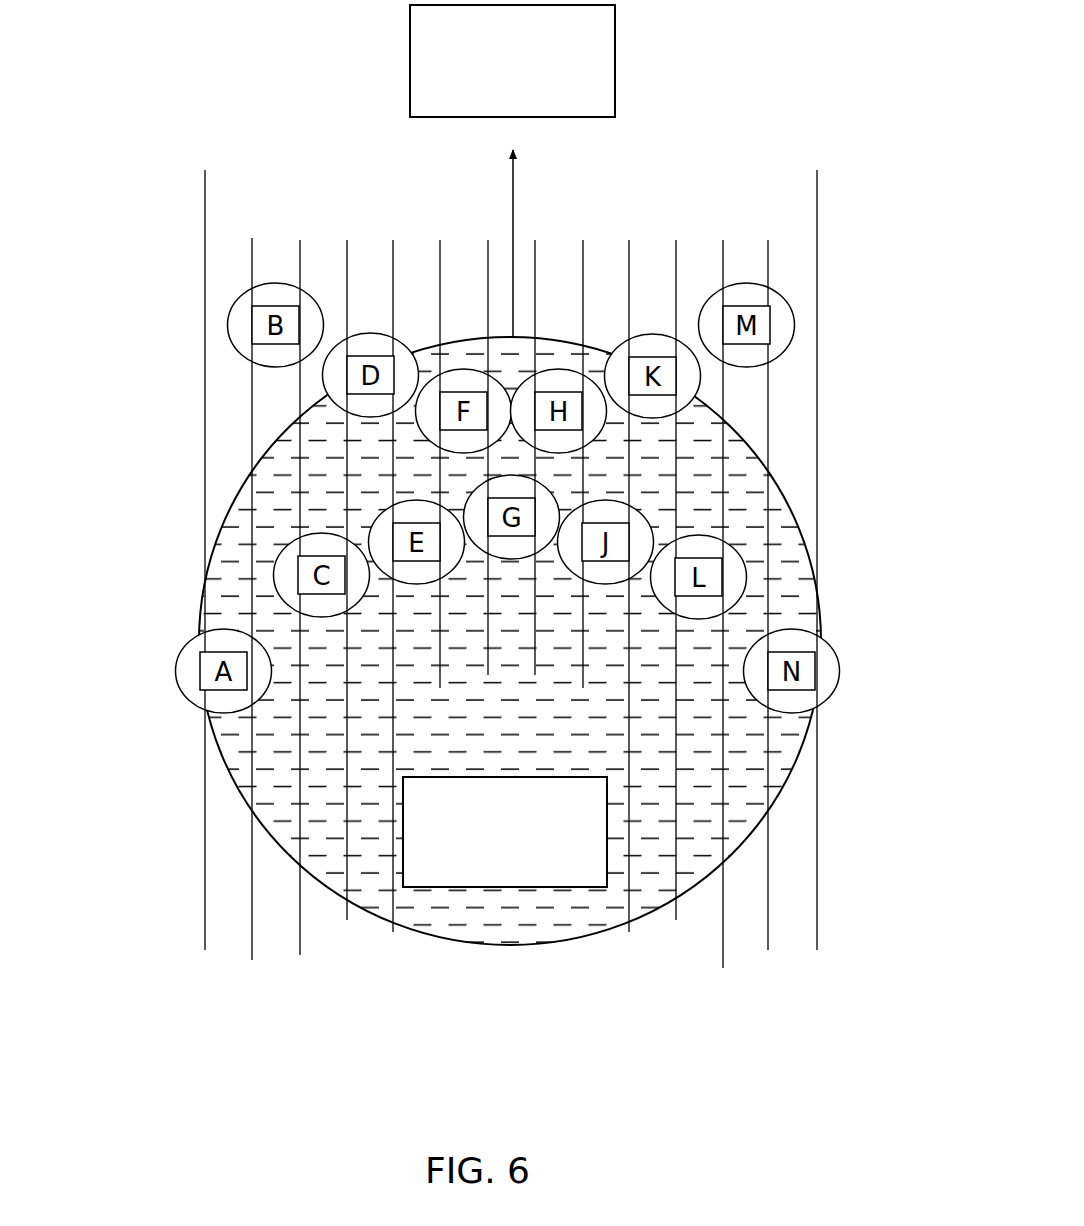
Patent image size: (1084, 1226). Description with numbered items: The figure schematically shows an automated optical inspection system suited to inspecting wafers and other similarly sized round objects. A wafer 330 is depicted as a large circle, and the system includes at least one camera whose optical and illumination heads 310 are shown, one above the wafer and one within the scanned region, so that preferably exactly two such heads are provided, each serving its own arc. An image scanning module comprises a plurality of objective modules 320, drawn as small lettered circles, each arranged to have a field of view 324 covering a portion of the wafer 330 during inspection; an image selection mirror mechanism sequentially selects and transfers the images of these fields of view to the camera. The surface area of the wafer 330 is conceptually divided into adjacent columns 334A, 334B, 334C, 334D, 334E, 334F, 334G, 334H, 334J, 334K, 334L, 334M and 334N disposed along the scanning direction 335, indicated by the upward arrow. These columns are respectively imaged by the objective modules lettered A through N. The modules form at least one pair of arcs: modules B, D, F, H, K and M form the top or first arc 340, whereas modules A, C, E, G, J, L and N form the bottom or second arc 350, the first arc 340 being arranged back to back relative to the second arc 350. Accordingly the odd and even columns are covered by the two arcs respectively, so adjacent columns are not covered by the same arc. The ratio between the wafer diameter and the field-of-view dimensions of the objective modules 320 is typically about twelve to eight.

The optical and illumination head 310 is at (615, 60).
The objective module 320 is at (738, 293).
The field of view 324 is at (270, 320).
The wafer 330 is at (652, 877).
The column 334A is at (222, 225).
The column 334B is at (272, 260).
The column 334C is at (318, 283).
The column 334D is at (368, 308).
The column 334E is at (415, 653).
The column 334F is at (458, 640).
The column 334G is at (517, 660).
The column 334H is at (558, 653).
The column 334J is at (597, 310).
The column 334K is at (655, 262).
The column 334L is at (700, 253).
The column 334M is at (745, 250).
The column 334N is at (792, 252).
The scanning direction 335 is at (510, 205).
The first arc 340 is at (160, 190).
The second arc 350 is at (842, 733).